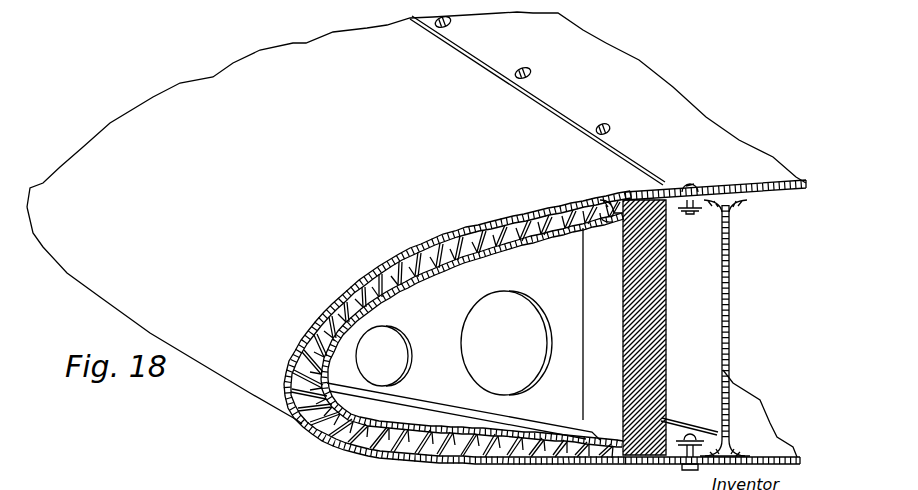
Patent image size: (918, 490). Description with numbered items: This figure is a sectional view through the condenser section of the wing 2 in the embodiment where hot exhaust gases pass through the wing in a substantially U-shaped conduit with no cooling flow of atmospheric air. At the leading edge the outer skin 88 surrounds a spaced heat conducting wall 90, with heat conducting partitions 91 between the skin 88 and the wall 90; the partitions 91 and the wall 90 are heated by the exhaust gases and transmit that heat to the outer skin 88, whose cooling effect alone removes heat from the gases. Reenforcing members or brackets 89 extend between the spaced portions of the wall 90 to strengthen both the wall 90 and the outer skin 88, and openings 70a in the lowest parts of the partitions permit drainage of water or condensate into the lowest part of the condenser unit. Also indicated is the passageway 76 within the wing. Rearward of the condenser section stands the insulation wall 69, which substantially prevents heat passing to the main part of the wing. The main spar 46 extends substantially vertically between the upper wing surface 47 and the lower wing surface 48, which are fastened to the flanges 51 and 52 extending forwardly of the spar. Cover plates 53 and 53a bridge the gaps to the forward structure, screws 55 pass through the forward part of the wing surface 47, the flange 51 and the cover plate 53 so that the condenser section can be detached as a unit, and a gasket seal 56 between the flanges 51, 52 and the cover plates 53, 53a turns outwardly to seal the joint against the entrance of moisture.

The wing 2 is at (102, 123).
The main spar 46 is at (730, 324).
The upper wing surface 47 is at (694, 108).
The lower wing surface 48 is at (757, 456).
The flange 51 is at (730, 214).
The flange 52 is at (730, 432).
The cover plate 53 is at (678, 203).
The cover plate 53a is at (724, 422).
The screws 55 is at (601, 124).
The gasket seal 56 is at (583, 134).
The insulation wall 69 is at (668, 293).
The openings 70a is at (520, 217).
The passageway 76 is at (480, 243).
The outer skin 88 is at (323, 296).
The reenforcing members or brackets 89 is at (463, 334).
The wall 90 is at (430, 277).
The partitions 91 is at (387, 262).